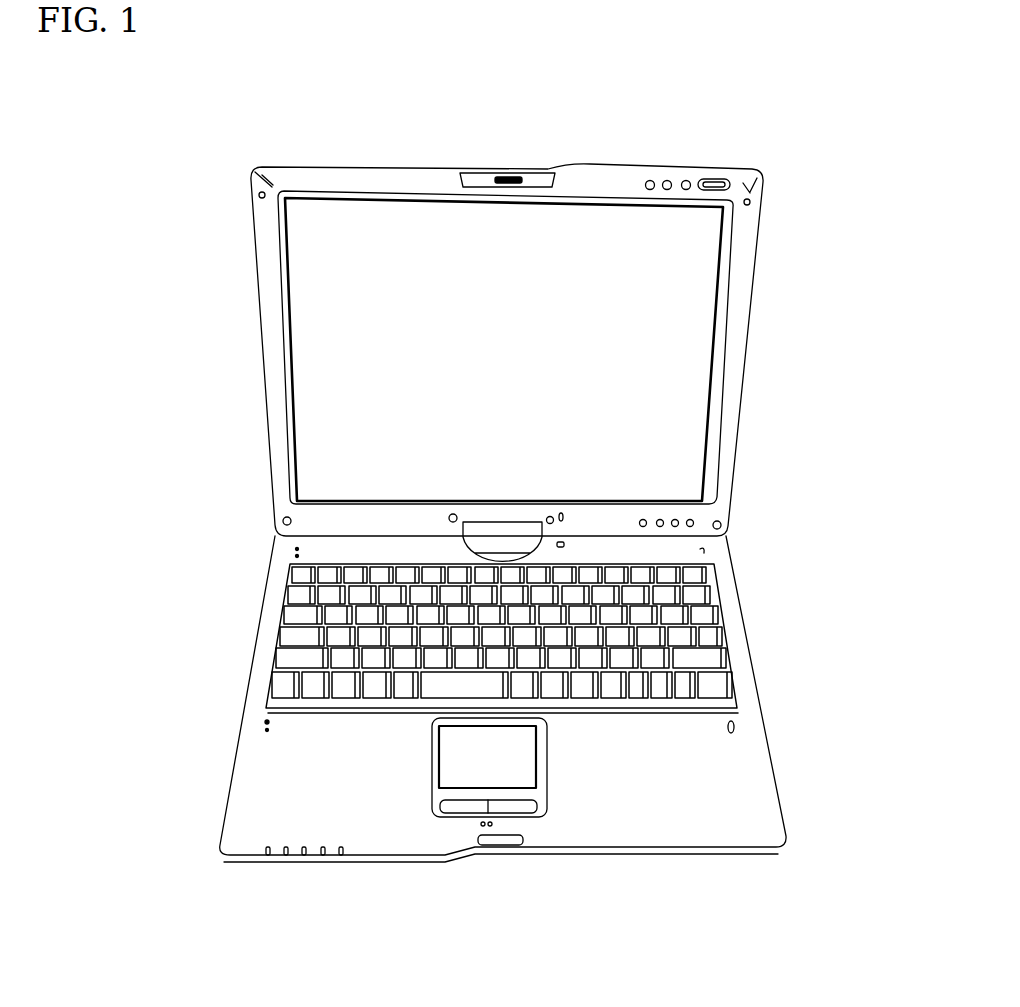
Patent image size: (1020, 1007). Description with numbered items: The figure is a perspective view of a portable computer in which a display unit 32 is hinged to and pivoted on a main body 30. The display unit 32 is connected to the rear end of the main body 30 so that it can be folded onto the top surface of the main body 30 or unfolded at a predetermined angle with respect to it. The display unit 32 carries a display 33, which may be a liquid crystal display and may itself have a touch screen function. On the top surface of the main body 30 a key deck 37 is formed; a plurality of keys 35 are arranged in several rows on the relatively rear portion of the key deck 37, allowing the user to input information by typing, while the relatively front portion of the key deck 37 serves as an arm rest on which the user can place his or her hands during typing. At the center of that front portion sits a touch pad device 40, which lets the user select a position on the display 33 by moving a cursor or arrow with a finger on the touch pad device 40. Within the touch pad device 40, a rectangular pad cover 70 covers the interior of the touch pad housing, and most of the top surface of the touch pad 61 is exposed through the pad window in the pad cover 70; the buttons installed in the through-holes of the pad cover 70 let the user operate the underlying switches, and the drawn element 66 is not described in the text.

The main body 30 is at (479, 564).
The display unit 32 is at (573, 350).
The display 33 is at (689, 341).
The keys 35 is at (703, 636).
The key deck 37 is at (718, 830).
The touch pad device 40 is at (604, 841).
The touch pad 61 is at (525, 768).
The click button 66 is at (468, 803).
The pad cover 70 is at (430, 798).